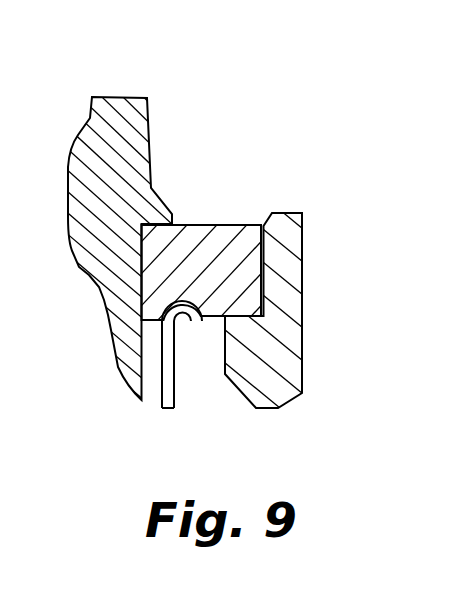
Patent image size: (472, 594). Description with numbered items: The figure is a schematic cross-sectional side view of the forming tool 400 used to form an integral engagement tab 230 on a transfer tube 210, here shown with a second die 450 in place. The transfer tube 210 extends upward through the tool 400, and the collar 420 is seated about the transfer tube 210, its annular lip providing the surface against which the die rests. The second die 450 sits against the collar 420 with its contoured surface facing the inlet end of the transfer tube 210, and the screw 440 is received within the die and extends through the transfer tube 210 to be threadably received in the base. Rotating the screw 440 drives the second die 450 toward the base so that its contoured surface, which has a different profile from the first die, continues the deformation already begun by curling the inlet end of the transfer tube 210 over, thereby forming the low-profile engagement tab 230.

The tool 400 is at (314, 106).
The screw 440 is at (138, 142).
The second die 450 is at (213, 243).
The collar 420 is at (293, 337).
The engagement tab 230 is at (189, 338).
The transfer tube 210 is at (165, 390).